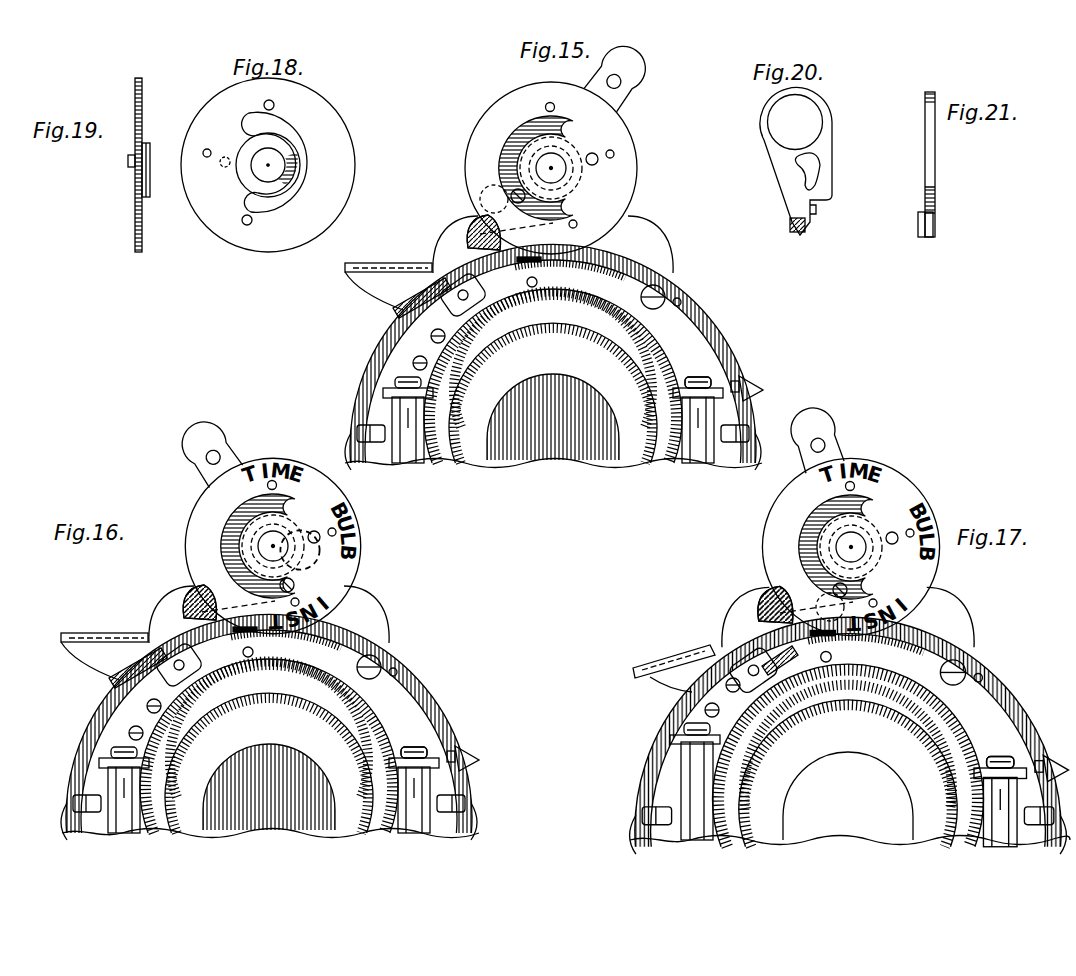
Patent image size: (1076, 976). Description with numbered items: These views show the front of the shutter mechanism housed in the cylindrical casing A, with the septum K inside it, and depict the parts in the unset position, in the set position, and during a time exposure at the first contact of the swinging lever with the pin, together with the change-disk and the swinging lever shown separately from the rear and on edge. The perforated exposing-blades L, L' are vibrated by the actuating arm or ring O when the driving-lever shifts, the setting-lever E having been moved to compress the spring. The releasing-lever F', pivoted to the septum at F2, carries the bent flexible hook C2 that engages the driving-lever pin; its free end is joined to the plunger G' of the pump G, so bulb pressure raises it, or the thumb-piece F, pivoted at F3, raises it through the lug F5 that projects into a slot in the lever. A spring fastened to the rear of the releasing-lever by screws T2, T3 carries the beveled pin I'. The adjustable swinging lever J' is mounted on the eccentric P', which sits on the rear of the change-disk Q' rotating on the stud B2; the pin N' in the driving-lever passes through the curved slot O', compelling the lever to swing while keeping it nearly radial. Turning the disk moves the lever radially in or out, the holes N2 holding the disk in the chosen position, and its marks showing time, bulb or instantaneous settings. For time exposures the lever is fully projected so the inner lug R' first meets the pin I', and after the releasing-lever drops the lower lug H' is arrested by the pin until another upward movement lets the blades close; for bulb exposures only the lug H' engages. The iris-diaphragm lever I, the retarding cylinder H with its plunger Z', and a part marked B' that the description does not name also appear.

In FIG. 15, the cylindrical casing A is at (723, 328).
In FIG. 16, the cylindrical casing A is at (438, 697).
In FIG. 17, the cylindrical casing A is at (850, 735).
In FIG. 15, the septum K is at (558, 376).
In FIG. 16, the septum K is at (273, 746).
In FIG. 17, the septum K is at (851, 755).
In FIG. 15, the actuating arm or ring O is at (553, 393).
In FIG. 16, the actuating arm or ring O is at (269, 763).
In FIG. 17, the actuating arm or ring O is at (848, 773).
In FIG. 15, the perforated exposing-blade L is at (553, 417).
In FIG. 16, the perforated exposing-blade L is at (269, 787).
In FIG. 15, the perforated exposing-blade L' is at (553, 477).
In FIG. 15, the pump G is at (411, 439).
In FIG. 16, the pump G is at (124, 790).
In FIG. 17, the pump G is at (715, 781).
In FIG. 15, the cylinder of the retarding device H is at (711, 441).
In FIG. 16, the cylinder of the retarding device H is at (451, 790).
In FIG. 17, the cylinder of the retarding device H is at (992, 801).
In FIG. 15, the plunger G' is at (345, 418).
In FIG. 16, the plunger G' is at (64, 786).
In FIG. 17, the plunger G' is at (651, 789).
In FIG. 15, the plunger Z' is at (729, 365).
In FIG. 16, the plunger Z' is at (443, 735).
In FIG. 17, the plunger Z' is at (966, 768).
In FIG. 15, the iris-diaphragm adjusting lever I is at (751, 388).
In FIG. 16, the iris-diaphragm adjusting lever I is at (473, 757).
In FIG. 17, the iris-diaphragm adjusting lever I is at (1052, 752).
In FIG. 15, the catch or thumb-piece F is at (388, 273).
In FIG. 16, the catch or thumb-piece F is at (104, 645).
In FIG. 17, the catch or thumb-piece F is at (674, 663).
In FIG. 15, the releasing-lever F' is at (570, 274).
In FIG. 16, the releasing-lever F' is at (286, 646).
In FIG. 17, the releasing-lever F' is at (866, 643).
In FIG. 15, the pivot of releasing-lever F2 is at (665, 294).
In FIG. 16, the pivot of releasing-lever F2 is at (386, 666).
In FIG. 17, the pivot of releasing-lever F2 is at (960, 660).
In FIG. 15, the pivot of thumb-piece F3 is at (400, 303).
In FIG. 16, the pivot of thumb-piece F3 is at (117, 685).
In FIG. 17, the pivot of thumb-piece F3 is at (785, 667).
In FIG. 15, the lug F5 is at (490, 360).
In FIG. 16, the lug F5 is at (224, 680).
In FIG. 17, the lug F5 is at (765, 690).
In FIG. 15, the bent flexible hook C2 is at (501, 293).
In FIG. 16, the bent flexible hook C2 is at (193, 665).
In FIG. 17, the bent flexible hook C2 is at (766, 641).
In FIG. 15, the pin I' is at (517, 284).
In FIG. 16, the pin I' is at (257, 655).
In FIG. 17, the pin I' is at (813, 649).
In FIG. 15, the screw T2 is at (444, 341).
In FIG. 16, the screw T2 is at (160, 711).
In FIG. 17, the screw T2 is at (738, 692).
In FIG. 15, the screw T3 is at (426, 369).
In FIG. 16, the screw T3 is at (142, 739).
In FIG. 17, the screw T3 is at (717, 716).
In FIG. 15, the bracket B' is at (554, 243).
In FIG. 16, the bracket B' is at (267, 612).
In FIG. 17, the bracket B' is at (843, 617).
In FIG. 15, the setting-lever E is at (628, 82).
In FIG. 16, the setting-lever E is at (185, 457).
In FIG. 17, the setting-lever E is at (833, 442).
In FIG. 15, the change-disk Q' is at (551, 159).
In FIG. 16, the change-disk Q' is at (261, 546).
In FIG. 17, the change-disk Q' is at (840, 546).
In FIG. 18, the change-disk Q' is at (268, 160).
In FIG. 19, the change-disk Q' is at (152, 164).
In FIG. 15, the holes N2 is at (555, 110).
In FIG. 16, the holes N2 is at (275, 484).
In FIG. 17, the holes N2 is at (850, 487).
In FIG. 15, the stud B2 is at (540, 163).
In FIG. 16, the stud B2 is at (276, 538).
In FIG. 17, the stud B2 is at (857, 537).
In FIG. 15, the pin N' is at (505, 168).
In FIG. 16, the pin N' is at (265, 563).
In FIG. 17, the pin N' is at (829, 549).
In FIG. 15, the curved slot O' is at (460, 193).
In FIG. 16, the curved slot O' is at (307, 555).
In FIG. 17, the curved slot O' is at (865, 592).
In FIG. 20, the curved slot O' is at (785, 171).
In FIG. 15, the inner lug R' is at (481, 192).
In FIG. 16, the inner lug R' is at (284, 635).
In FIG. 17, the inner lug R' is at (835, 638).
In FIG. 20, the inner lug R' is at (832, 206).
In FIG. 21, the inner lug R' is at (913, 198).
In FIG. 15, the adjustable swinging lever J' is at (489, 227).
In FIG. 16, the adjustable swinging lever J' is at (275, 603).
In FIG. 17, the adjustable swinging lever J' is at (865, 604).
In FIG. 20, the adjustable swinging lever J' is at (810, 161).
In FIG. 21, the adjustable swinging lever J' is at (945, 164).
In FIG. 15, the lug H' is at (463, 232).
In FIG. 16, the lug H' is at (298, 607).
In FIG. 17, the lug H' is at (816, 640).
In FIG. 20, the lug H' is at (780, 228).
In FIG. 21, the lug H' is at (912, 228).
In FIG. 18, the eccentric P' is at (251, 171).
In FIG. 19, the eccentric P' is at (159, 186).